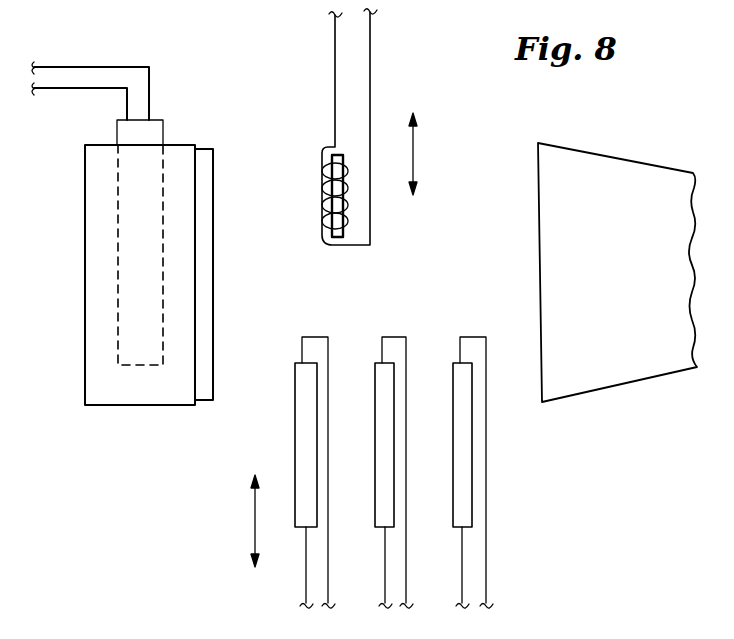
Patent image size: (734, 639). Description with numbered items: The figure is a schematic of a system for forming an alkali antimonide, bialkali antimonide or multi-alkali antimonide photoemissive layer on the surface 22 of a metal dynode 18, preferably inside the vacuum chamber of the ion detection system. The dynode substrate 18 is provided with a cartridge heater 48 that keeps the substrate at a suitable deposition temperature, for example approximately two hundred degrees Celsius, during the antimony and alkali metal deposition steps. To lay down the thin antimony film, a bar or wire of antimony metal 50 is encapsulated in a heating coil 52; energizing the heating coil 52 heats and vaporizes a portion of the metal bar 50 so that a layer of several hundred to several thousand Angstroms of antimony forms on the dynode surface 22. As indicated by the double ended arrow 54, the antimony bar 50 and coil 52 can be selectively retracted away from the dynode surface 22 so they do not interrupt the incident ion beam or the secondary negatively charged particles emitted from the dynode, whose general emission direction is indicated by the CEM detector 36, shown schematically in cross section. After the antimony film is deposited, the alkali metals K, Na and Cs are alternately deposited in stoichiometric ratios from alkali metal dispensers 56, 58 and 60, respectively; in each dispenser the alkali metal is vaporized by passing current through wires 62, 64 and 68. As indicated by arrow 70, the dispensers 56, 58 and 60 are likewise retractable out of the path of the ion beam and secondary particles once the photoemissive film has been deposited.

The dynode 18 is at (95, 378).
The dynode surface 22 is at (213, 166).
The cartridge heater 48 is at (118, 188).
The antimony metal bar 50 is at (345, 232).
The heating coil 52 is at (335, 53).
The double ended arrow 54 is at (415, 152).
The alkali metal dispenser 56 is at (320, 332).
The alkali metal dispenser 58 is at (397, 332).
The alkali metal dispenser 60 is at (474, 332).
The wires 62 is at (306, 585).
The wires 64 is at (406, 567).
The wires 68 is at (486, 565).
The arrow 70 is at (253, 517).
The CEM detector 36 is at (640, 382).